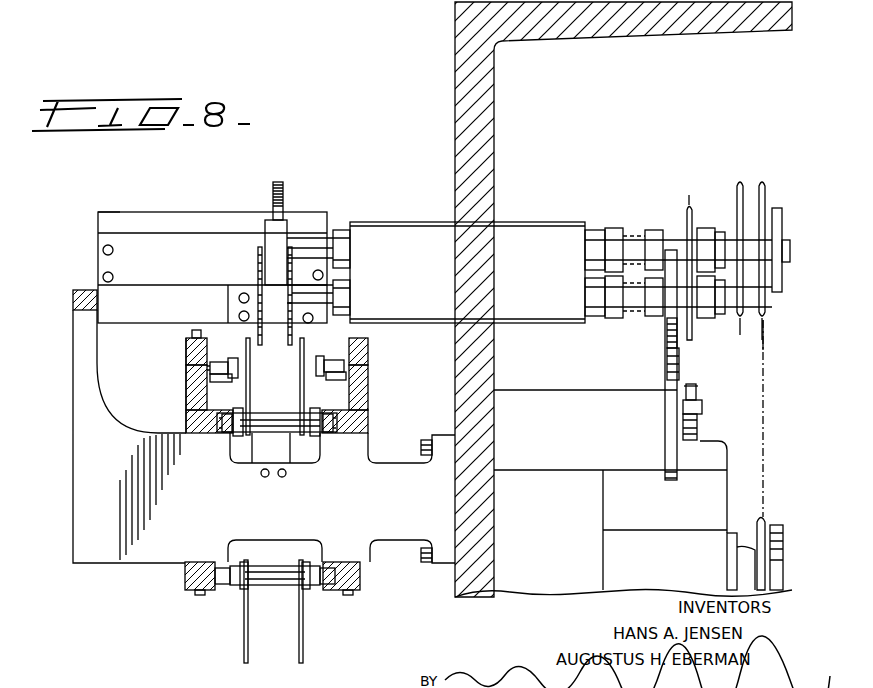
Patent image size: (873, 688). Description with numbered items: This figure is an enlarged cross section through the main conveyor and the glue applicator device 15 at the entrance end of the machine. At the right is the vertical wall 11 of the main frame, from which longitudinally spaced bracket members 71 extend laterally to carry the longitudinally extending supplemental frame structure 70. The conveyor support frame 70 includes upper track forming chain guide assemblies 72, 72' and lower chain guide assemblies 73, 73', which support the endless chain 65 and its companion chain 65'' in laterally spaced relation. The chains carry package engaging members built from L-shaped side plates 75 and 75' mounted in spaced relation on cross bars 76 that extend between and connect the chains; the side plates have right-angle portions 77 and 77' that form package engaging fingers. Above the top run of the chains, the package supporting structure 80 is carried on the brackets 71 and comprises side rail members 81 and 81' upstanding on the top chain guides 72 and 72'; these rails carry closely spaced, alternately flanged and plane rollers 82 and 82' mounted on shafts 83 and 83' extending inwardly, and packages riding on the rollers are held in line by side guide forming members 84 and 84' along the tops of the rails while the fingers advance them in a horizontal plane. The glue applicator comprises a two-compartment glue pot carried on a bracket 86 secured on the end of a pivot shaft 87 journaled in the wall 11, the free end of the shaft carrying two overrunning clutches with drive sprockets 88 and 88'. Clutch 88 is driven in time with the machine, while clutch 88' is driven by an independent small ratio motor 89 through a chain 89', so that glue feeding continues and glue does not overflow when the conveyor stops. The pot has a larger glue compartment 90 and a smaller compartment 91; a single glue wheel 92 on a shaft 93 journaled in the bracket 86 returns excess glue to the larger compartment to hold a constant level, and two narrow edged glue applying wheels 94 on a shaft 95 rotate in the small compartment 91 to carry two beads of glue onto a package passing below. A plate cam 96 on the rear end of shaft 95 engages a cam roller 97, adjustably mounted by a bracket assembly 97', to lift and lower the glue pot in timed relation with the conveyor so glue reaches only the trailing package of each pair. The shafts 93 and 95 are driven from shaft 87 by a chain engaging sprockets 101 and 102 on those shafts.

The vertical wall 11 is at (468, 96).
The glue applicator device 15 is at (77, 205).
The supplemental frame structure 70 is at (70, 546).
The bracket members 71 is at (398, 546).
The upper chain guide assembly 72 is at (189, 419).
The upper chain guide assembly 72' is at (368, 419).
The lower chain guide assembly 73 is at (207, 589).
The lower chain guide assembly 73' is at (340, 590).
The L-shaped side plate 75 is at (270, 465).
The L-shaped side plate 75' is at (285, 469).
The cross bars 76 is at (268, 427).
The package engaging finger 77 is at (262, 500).
The package engaging finger 77' is at (321, 500).
The package supporting structure 80 is at (152, 344).
The side rail member 81 is at (180, 387).
The side rail member 81' is at (375, 387).
The rollers 82 is at (222, 354).
The rollers 82' is at (356, 350).
The roller shaft 83 is at (223, 388).
The roller shaft 83' is at (327, 355).
The side guide forming member 84 is at (180, 347).
The side guide forming member 84' is at (380, 352).
The bracket 86 is at (380, 238).
The pivot shaft 87 is at (783, 250).
The overrunning clutch with drive sprocket 88 is at (738, 239).
The overrunning clutch with drive sprocket 88' is at (768, 242).
The ratio motor 89 is at (753, 539).
The chain 89' is at (745, 354).
The larger glue compartment 90 is at (164, 228).
The smaller glue compartment 91 is at (238, 310).
The glue wheel 92 is at (284, 190).
The shaft 93 is at (312, 247).
The glue applying wheels 94 is at (290, 345).
The shaft 95 is at (320, 298).
The plate cam 96 is at (668, 334).
The cam roller 97 is at (648, 366).
The bracket assembly 97' is at (663, 412).
The sprocket 101 is at (689, 208).
The sprocket 102 is at (688, 330).
The endless chain 65 is at (214, 440).
The nut 65'' is at (342, 440).